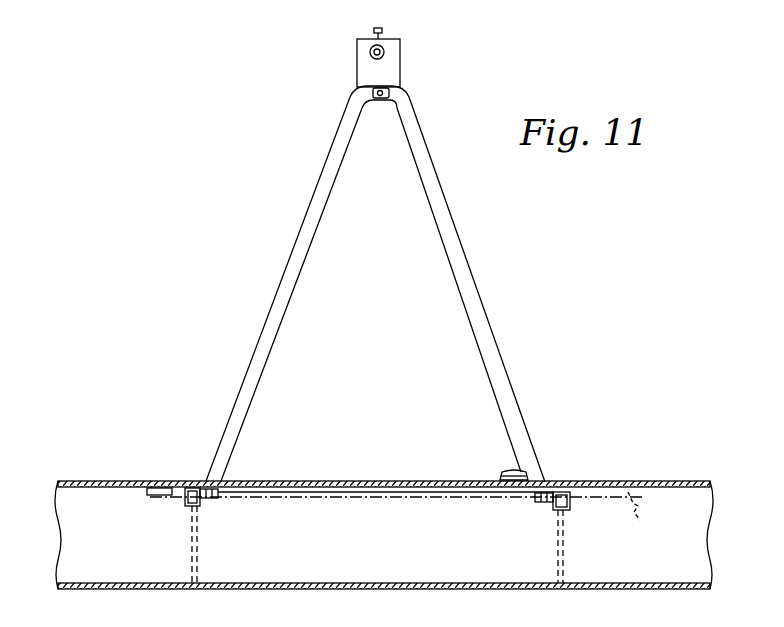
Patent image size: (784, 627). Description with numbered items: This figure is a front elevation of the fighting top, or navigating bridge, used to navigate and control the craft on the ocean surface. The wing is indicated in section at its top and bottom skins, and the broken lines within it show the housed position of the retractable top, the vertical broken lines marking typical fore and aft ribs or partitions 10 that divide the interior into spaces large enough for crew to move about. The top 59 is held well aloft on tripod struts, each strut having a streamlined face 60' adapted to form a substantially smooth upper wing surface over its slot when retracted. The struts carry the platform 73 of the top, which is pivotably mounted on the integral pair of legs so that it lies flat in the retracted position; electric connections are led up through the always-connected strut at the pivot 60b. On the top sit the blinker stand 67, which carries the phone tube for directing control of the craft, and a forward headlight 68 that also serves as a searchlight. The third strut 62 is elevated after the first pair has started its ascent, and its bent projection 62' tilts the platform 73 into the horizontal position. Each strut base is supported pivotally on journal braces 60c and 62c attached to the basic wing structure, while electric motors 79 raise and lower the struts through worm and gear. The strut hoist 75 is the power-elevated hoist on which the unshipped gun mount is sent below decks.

The fore and aft ribs 10 is at (199, 567).
The top 59 is at (394, 73).
The blinker stand 67 is at (386, 29).
The forward headlight 68 is at (384, 51).
The pivot 60b is at (393, 94).
The face 60' is at (405, 284).
The strut 62 is at (284, 289).
The strut hoist 75 is at (510, 472).
The platform 73 is at (182, 485).
The electric motors 79 is at (193, 507).
The journal brace 62c is at (203, 508).
The journal brace 60c is at (572, 505).
The bent projection 62' is at (658, 506).